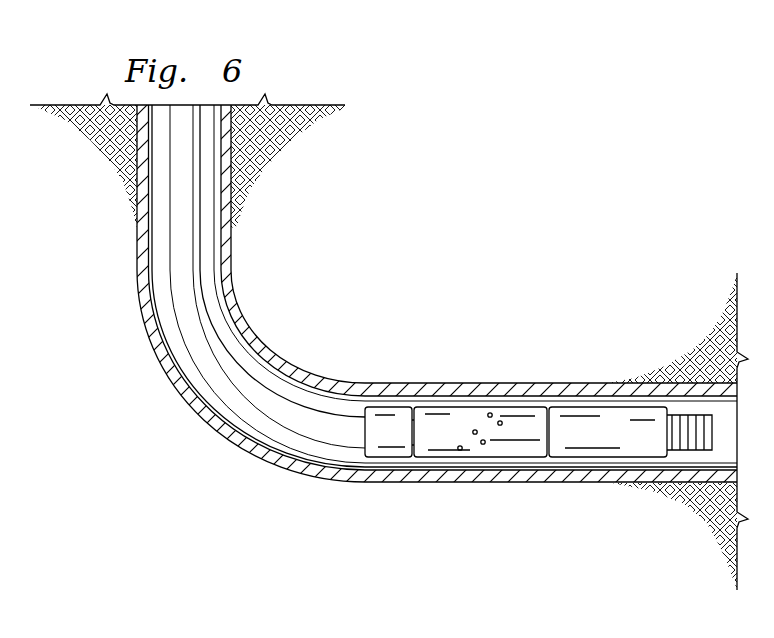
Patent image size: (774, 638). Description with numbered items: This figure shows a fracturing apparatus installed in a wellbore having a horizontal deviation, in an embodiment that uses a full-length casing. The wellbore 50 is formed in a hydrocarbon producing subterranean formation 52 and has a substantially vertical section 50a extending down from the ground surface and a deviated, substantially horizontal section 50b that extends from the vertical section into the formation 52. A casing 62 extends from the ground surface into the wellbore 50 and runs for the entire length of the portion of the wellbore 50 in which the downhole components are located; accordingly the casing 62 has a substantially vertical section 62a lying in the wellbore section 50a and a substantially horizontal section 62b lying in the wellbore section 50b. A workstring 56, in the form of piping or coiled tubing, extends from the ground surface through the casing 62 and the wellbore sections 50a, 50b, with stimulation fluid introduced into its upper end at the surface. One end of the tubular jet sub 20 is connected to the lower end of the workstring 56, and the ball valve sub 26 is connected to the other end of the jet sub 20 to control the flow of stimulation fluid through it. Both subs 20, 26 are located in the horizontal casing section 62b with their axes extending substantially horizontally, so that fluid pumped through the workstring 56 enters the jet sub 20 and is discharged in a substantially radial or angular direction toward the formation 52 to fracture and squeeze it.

The jet sub 20 is at (538, 468).
The ball valve sub 26 is at (583, 476).
The wellbore 50 is at (437, 293).
The substantially vertical wellbore section 50a is at (235, 171).
The substantially horizontal wellbore section 50b is at (627, 379).
The subterranean formation 52 is at (278, 133).
The workstring 56 is at (181, 298).
The casing 62 is at (387, 347).
The substantially vertical casing section 62a is at (130, 186).
The substantially horizontal casing section 62b is at (484, 383).